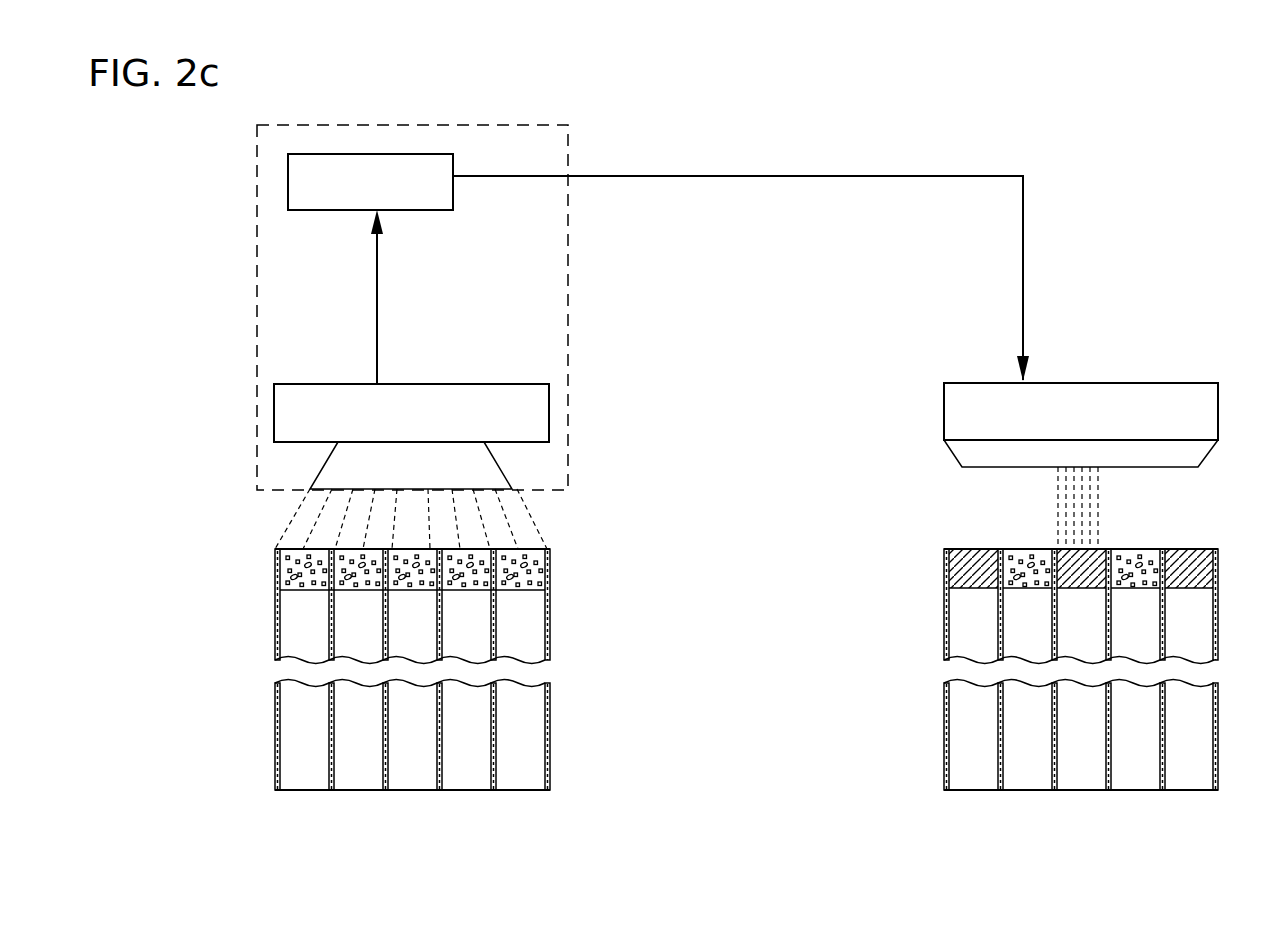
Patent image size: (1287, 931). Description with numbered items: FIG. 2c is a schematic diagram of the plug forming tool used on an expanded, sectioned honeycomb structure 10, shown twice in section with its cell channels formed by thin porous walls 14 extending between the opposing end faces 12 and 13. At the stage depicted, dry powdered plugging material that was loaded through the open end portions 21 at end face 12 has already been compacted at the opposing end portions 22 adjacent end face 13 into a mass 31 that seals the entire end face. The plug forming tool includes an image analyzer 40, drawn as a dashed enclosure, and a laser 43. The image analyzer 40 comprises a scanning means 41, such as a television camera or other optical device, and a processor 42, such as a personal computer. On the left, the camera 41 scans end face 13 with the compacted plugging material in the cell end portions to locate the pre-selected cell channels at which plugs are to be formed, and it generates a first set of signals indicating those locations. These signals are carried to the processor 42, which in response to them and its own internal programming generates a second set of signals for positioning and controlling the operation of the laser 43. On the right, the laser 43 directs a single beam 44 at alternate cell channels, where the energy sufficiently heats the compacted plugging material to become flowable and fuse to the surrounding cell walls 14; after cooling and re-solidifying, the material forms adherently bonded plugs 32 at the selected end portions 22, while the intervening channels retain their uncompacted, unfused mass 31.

The honeycomb structure 10 is at (715, 665).
The end face 12 is at (275, 790).
The end face 13 is at (275, 550).
The walls 14 is at (549, 640).
The open end portions 21 is at (500, 793).
The end portions 22 is at (543, 549).
The mass 31 is at (287, 573).
The plugs 32 is at (965, 575).
The image analyzer 40 is at (568, 265).
The scanning means 41 is at (537, 415).
The processor 42 is at (453, 186).
The laser 43 is at (960, 418).
The laser beam 44 is at (1100, 497).